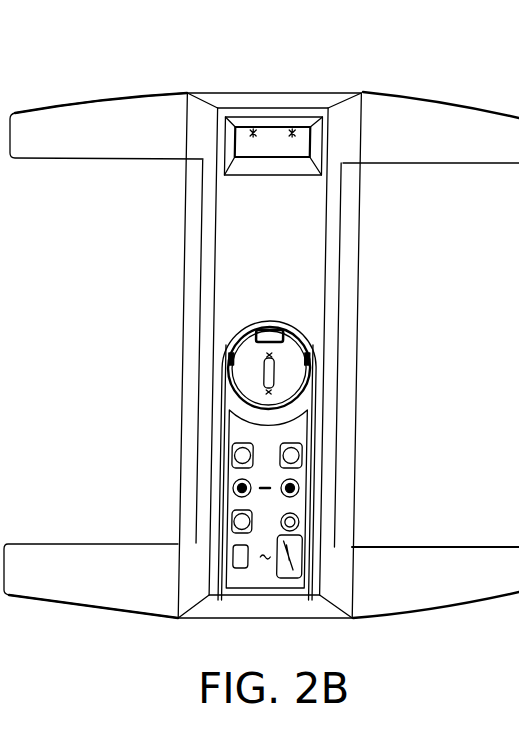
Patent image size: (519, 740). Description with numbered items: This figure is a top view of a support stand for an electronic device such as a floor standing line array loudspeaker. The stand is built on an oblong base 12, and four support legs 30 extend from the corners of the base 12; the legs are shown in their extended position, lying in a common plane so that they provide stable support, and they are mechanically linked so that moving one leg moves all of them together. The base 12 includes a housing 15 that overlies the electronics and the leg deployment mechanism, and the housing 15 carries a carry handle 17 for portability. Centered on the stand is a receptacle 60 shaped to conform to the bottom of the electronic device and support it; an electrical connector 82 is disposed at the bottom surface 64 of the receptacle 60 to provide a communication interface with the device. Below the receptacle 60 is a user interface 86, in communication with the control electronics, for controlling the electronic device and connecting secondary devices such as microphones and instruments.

The base 12 is at (337, 398).
The housing 15 is at (333, 243).
The carry handle 17 is at (269, 137).
The support legs 30 is at (424, 123).
The receptacle 60 is at (231, 333).
The bottom surface 64 is at (250, 385).
The electrical connector 82 is at (278, 363).
The user interface 86 is at (291, 479).